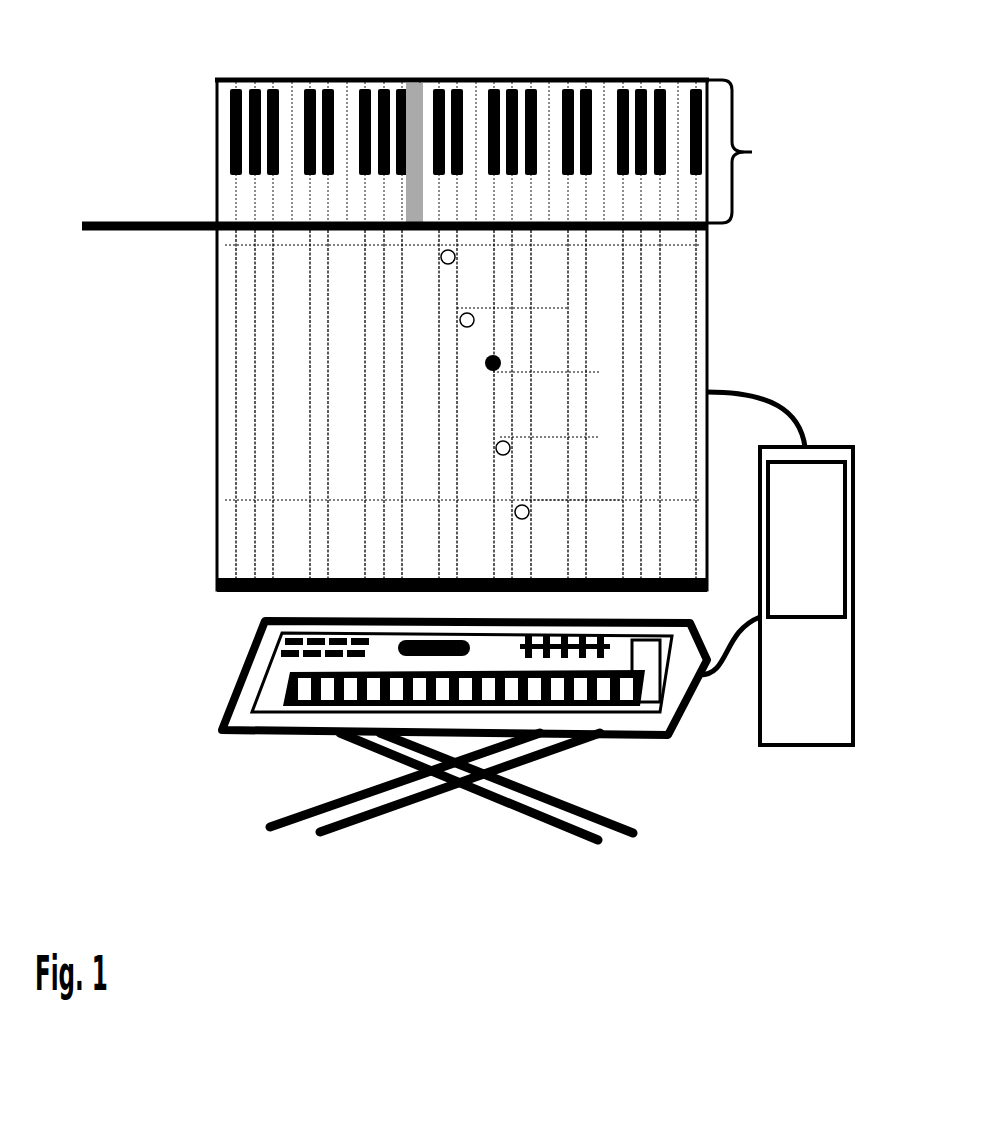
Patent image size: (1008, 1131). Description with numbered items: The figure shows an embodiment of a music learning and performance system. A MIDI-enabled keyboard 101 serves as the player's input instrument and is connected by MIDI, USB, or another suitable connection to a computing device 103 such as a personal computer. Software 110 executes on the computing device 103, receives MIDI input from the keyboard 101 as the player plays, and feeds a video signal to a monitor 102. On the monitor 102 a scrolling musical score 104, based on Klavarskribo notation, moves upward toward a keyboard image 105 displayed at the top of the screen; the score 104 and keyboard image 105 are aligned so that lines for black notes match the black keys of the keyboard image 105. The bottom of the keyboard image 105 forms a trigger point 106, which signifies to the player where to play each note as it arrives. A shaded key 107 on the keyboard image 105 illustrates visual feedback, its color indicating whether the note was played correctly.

The MIDI-enabled keyboard 101 is at (233, 690).
The monitor 102 is at (497, 80).
The computing device 103 is at (778, 745).
The scrolling musical score 104 is at (583, 378).
The keyboard image 105 is at (755, 151).
The trigger point 106 is at (173, 230).
The shaded key 107 is at (417, 123).
The software 110 is at (845, 527).